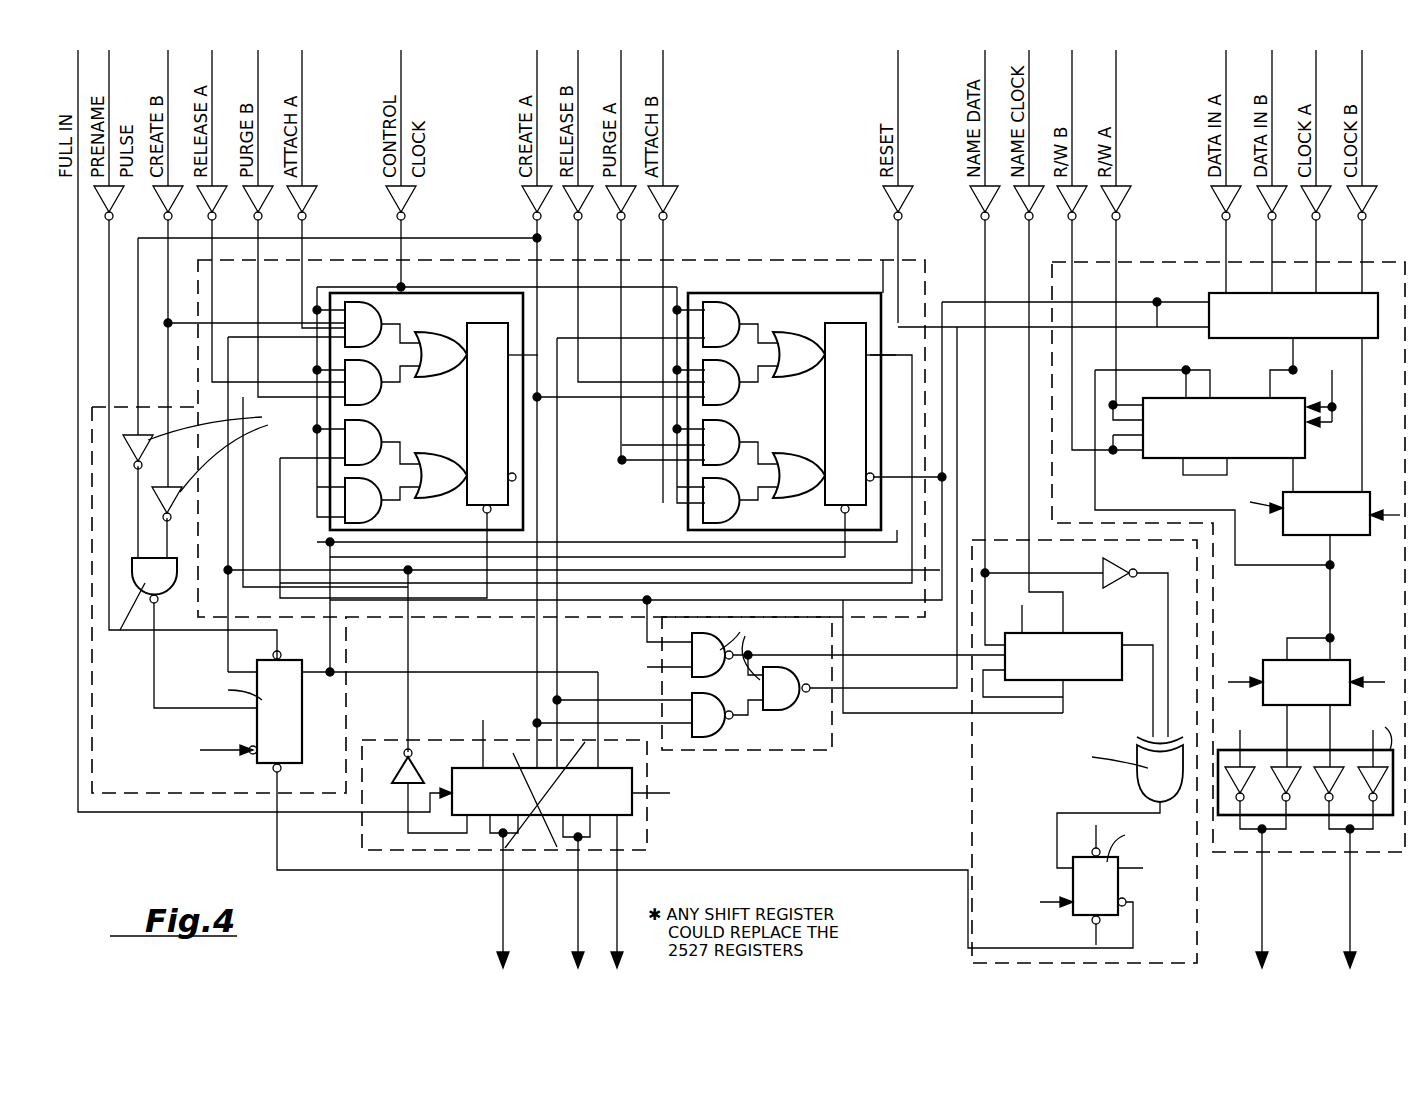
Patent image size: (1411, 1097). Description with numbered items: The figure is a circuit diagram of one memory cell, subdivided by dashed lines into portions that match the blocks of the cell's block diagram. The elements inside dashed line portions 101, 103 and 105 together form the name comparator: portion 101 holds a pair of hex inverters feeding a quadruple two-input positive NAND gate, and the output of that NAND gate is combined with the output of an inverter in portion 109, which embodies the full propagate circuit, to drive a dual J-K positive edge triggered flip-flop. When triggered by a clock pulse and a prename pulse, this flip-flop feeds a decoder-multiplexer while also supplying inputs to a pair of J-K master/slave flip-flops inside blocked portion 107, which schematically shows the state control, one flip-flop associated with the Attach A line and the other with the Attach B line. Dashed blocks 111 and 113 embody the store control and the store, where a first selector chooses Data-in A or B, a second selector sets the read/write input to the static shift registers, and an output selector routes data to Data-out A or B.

The dashed line portion 101 is at (347, 735).
The dashed line portion 103 is at (647, 842).
The dashed line portion 105 is at (972, 792).
The blocked portion 107 is at (735, 243).
The full propagate circuit portion 109 is at (362, 838).
The dashed block 111 is at (762, 752).
The dashed block 113 is at (1182, 262).